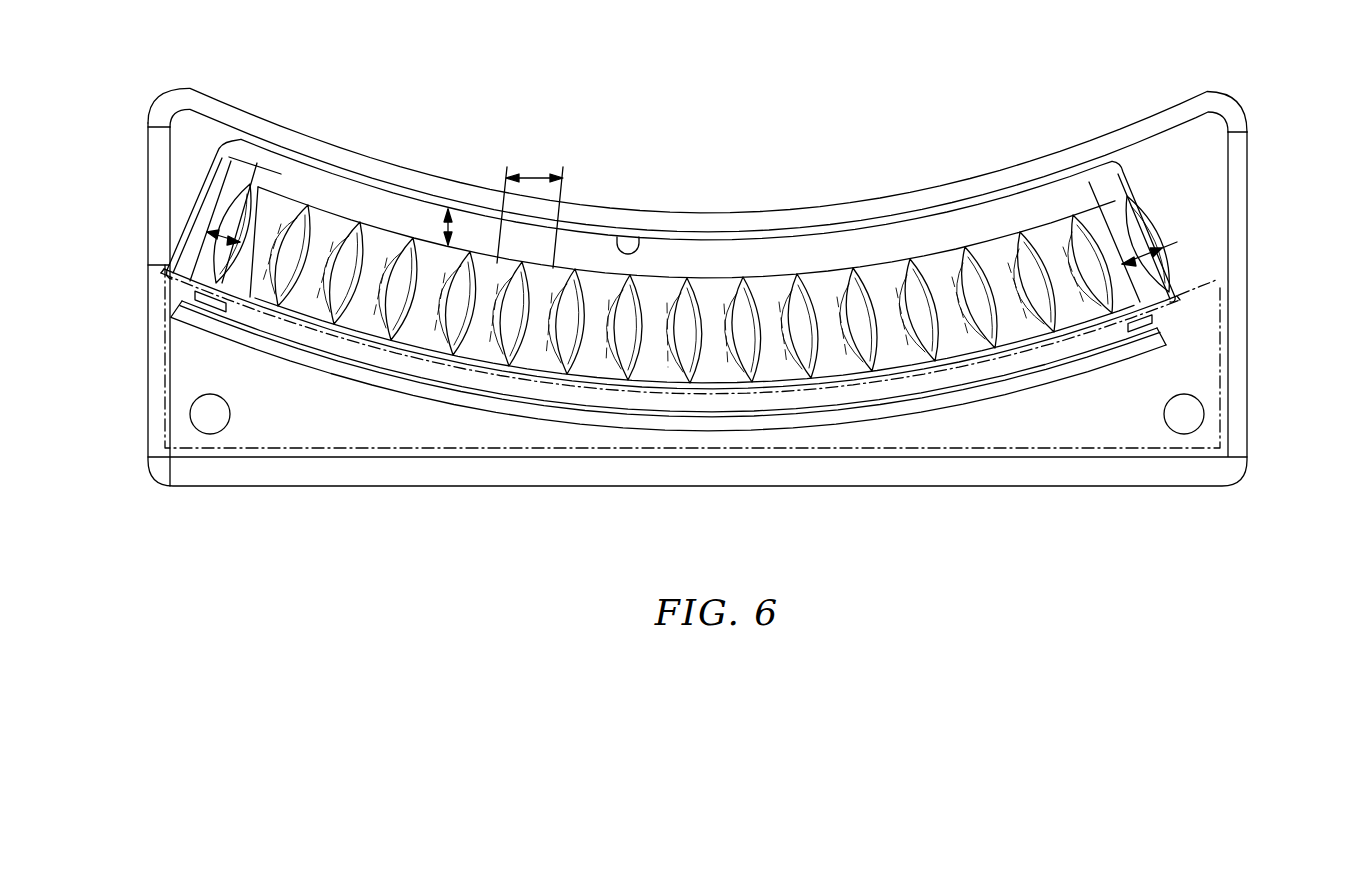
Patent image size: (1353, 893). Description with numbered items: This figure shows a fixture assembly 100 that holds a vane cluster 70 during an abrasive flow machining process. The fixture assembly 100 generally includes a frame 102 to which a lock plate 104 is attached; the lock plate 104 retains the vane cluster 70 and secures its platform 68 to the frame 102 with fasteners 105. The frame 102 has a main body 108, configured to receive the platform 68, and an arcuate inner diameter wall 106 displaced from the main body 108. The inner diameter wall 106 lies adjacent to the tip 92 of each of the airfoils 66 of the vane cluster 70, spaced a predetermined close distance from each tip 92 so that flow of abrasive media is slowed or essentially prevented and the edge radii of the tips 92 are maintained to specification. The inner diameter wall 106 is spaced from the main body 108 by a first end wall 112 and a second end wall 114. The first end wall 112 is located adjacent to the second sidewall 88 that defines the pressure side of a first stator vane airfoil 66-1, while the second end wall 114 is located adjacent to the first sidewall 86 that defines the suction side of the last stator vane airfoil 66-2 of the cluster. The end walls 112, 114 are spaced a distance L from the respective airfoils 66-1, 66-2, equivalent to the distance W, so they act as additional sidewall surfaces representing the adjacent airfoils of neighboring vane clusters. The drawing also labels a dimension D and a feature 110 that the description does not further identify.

The fixture assembly 100 is at (1280, 115).
The frame 102 is at (1180, 163).
The lock plate 104 is at (1055, 447).
The fasteners 105 is at (210, 420).
The inner diameter wall 106 is at (930, 200).
The main body 108 is at (1190, 215).
The notch 110 is at (617, 236).
The first end wall 112 is at (228, 207).
The second end wall 114 is at (1107, 205).
The airfoils 66 is at (660, 374).
The first stator vane airfoil 66-1 is at (310, 195).
The stator vane airfoil 66-2 is at (1150, 305).
The platform 68 is at (850, 367).
The vane cluster 70 is at (801, 322).
The first sidewall 86 is at (1085, 212).
The second sidewall 88 is at (243, 195).
The tip 92 is at (672, 277).
The distance L is at (247, 232).
The depth D is at (448, 208).
The distance W is at (530, 209).